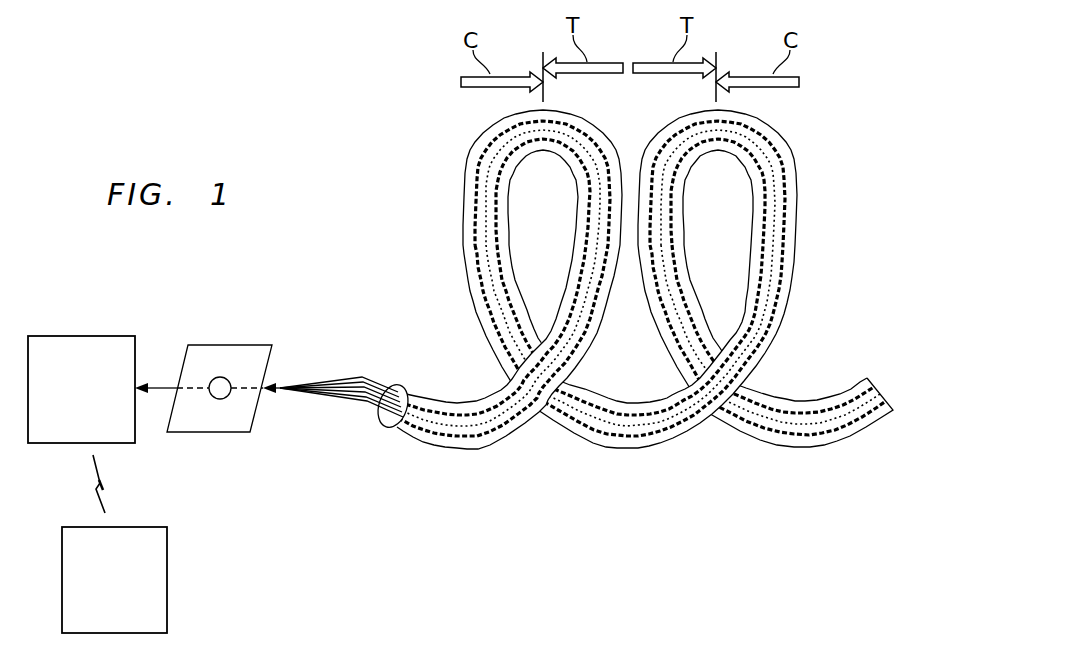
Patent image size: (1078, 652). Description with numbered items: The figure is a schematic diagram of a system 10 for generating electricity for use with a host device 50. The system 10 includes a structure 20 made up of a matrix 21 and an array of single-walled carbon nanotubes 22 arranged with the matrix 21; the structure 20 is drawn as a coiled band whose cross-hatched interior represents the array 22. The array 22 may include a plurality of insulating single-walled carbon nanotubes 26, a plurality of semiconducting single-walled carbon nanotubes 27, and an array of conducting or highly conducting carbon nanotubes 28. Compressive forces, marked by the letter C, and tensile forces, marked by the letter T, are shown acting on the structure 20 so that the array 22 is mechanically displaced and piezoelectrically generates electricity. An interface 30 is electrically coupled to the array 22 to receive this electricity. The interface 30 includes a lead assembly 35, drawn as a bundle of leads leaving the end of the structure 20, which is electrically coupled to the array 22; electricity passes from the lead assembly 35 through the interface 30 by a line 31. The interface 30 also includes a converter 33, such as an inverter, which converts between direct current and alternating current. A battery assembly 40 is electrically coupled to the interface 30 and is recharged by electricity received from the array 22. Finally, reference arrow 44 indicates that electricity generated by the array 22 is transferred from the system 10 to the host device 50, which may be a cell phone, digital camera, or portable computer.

The system 10 is at (360, 247).
The structure 20 is at (633, 301).
The matrix 21 is at (462, 195).
The array of single-walled carbon nanotubes 22 is at (785, 324).
The insulating single-walled carbon nanotubes 26 is at (453, 412).
The semiconducting single-walled carbon nanotubes 27 is at (650, 449).
The conducting carbon nanotubes 28 is at (667, 147).
The interface 30 is at (247, 345).
The line 31 is at (283, 393).
The converter 33 is at (222, 377).
The lead assembly 35 is at (357, 377).
The battery assembly 40 is at (64, 336).
The reference arrow 44 is at (108, 490).
The host device 50 is at (170, 587).